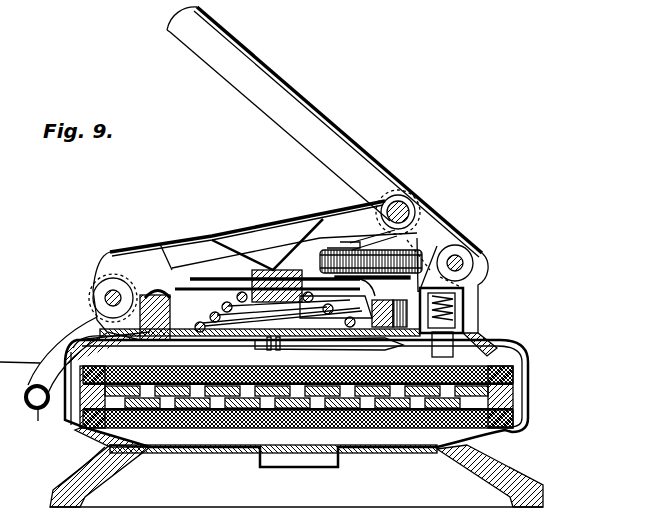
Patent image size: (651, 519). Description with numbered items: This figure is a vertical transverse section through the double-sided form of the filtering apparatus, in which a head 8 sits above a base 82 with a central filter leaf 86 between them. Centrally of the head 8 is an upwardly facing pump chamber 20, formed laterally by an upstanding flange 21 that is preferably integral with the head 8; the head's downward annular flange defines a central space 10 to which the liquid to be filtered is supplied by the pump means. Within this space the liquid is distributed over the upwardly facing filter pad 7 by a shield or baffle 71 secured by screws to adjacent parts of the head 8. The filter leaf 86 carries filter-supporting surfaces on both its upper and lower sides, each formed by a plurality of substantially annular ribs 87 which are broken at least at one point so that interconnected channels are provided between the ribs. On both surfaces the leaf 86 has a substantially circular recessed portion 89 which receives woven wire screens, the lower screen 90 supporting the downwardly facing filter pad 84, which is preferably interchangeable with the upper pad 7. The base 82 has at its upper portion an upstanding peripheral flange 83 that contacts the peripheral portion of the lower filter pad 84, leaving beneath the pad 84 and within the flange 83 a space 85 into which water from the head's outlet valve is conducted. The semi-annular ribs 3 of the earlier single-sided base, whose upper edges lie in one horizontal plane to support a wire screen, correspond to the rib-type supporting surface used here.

The semi-annular ribs 3 is at (322, 345).
The filter pad 7 is at (143, 369).
The head 8 is at (488, 334).
The central space 10 is at (173, 363).
The pump chamber 20 is at (336, 307).
The upstanding flange 21 is at (100, 317).
The shield or baffle 71 is at (238, 353).
The base 82 is at (500, 465).
The upstanding peripheral flange 83 is at (505, 413).
The filter pad 84 is at (218, 422).
The space 85 is at (297, 440).
The central filter leaf 86 is at (508, 387).
The annular ribs 87 is at (443, 427).
The recessed portion 89 is at (72, 440).
The woven wire screen 90 is at (180, 403).